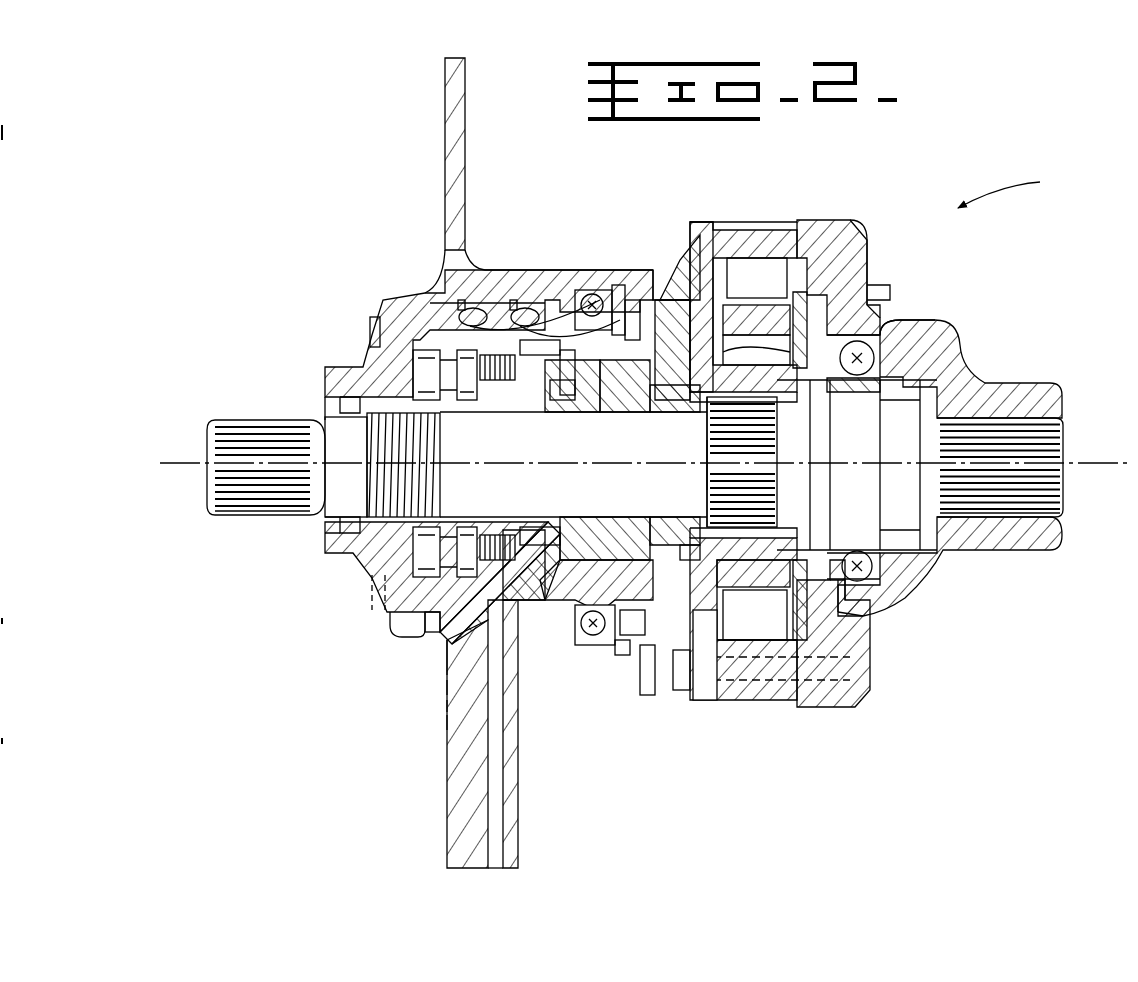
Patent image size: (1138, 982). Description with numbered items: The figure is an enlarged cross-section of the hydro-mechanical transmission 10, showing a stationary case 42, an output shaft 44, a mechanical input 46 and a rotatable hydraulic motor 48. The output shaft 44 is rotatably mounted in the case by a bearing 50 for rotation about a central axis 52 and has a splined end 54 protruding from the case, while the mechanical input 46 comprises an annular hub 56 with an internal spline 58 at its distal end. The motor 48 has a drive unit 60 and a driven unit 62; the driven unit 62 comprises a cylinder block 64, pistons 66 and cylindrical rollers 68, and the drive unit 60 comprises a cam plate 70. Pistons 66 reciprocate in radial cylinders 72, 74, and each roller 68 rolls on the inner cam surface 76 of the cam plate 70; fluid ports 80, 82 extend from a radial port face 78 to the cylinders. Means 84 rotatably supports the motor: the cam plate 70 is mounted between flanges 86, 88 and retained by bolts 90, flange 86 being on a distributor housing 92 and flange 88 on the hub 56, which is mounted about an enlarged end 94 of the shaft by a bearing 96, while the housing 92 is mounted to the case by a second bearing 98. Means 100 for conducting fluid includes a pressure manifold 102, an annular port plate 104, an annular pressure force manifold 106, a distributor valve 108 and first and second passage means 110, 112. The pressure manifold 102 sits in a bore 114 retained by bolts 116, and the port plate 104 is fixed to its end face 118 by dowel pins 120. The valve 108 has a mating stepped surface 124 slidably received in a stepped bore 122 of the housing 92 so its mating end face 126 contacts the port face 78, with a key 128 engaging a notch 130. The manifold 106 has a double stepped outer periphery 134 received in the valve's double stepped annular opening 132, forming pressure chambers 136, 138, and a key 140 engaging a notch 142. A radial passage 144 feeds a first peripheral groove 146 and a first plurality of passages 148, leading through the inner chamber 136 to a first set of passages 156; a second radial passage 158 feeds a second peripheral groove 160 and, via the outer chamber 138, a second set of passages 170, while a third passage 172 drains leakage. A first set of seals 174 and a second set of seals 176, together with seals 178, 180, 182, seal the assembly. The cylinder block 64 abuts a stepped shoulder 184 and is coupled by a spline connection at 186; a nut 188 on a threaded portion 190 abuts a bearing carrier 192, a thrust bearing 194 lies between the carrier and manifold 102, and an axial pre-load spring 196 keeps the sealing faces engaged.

The hydro-mechanical transmission 10 is at (999, 188).
The stationary case 42 is at (470, 110).
The output shaft 44 is at (571, 491).
The mechanical input 46 is at (1032, 378).
The hydraulic motor 48 is at (760, 196).
The bearing 50 is at (500, 527).
The central axis 52 is at (190, 470).
The splined end 54 is at (232, 515).
The annular hub 56 is at (1000, 565).
The internal spline 58 is at (1048, 505).
The drive unit 60 is at (775, 220).
The driven unit 62 is at (869, 252).
The cylinder block 64 is at (892, 312).
The pistons 66 is at (776, 332).
The cylindrical rollers 68 is at (772, 290).
The cam plate 70 is at (780, 708).
The cylinder 72 is at (890, 292).
The cylinder 74 is at (845, 630).
The inner cam surface 76 is at (745, 220).
The radial port face 78 is at (700, 527).
The fluid port 80 is at (735, 365).
The fluid port 82 is at (812, 525).
The means for rotatably supporting the hydraulic motor 84 is at (605, 632).
The flange 86 is at (705, 702).
The flange 88 is at (852, 216).
The bolts 90 is at (680, 692).
The distributor housing 92 is at (682, 290).
The enlarged end 94 is at (942, 356).
The bearing 96 is at (872, 618).
The second bearing 98 is at (590, 292).
The means for conducting pressurized hydraulic fluid 100 is at (497, 871).
The pressure manifold 102 is at (440, 625).
The annular port plate 104 is at (590, 645).
The annular pressure force manifold 106 is at (600, 527).
The distributor valve 108 is at (720, 692).
The first passage means 110 is at (398, 620).
The second passage means 112 is at (447, 727).
The bore 114 is at (447, 652).
The bolts 116 is at (370, 330).
The end face 118 is at (575, 335).
The dowel pins 120 is at (520, 382).
The stepped bore 122 is at (637, 637).
The mating stepped surface 124 is at (640, 300).
The mating end face 126 is at (706, 456).
The key 128 is at (760, 702).
The notch 130 is at (692, 295).
The double stepped annular opening 132 is at (560, 402).
The double stepped outer periphery 134 is at (655, 527).
The inner pressure chamber 136 is at (620, 402).
The outer pressure chamber 138 is at (575, 402).
The key 140 is at (535, 527).
The notch 142 is at (565, 350).
The radial passage 144 is at (475, 800).
The first peripheral groove 146 is at (447, 668).
The first plurality of passages 148 is at (378, 595).
The first set of passages 156 is at (790, 462).
The second radial passage 158 is at (447, 706).
The second peripheral groove 160 is at (447, 686).
The second set of passages 170 is at (690, 402).
The third passage 172 is at (515, 655).
The first set of seals 174 is at (520, 320).
The second set of seals 176 is at (618, 300).
The seal 178 is at (335, 405).
The seal 180 is at (622, 656).
The seal 182 is at (935, 320).
The stepped shoulder 184 is at (852, 620).
The spline connection 186 is at (798, 505).
The nut 188 is at (340, 530).
The threaded portion 190 is at (380, 442).
The bearing carrier 192 is at (470, 402).
The thrust bearing 194 is at (470, 525).
The axial pre-load spring 196 is at (440, 318).